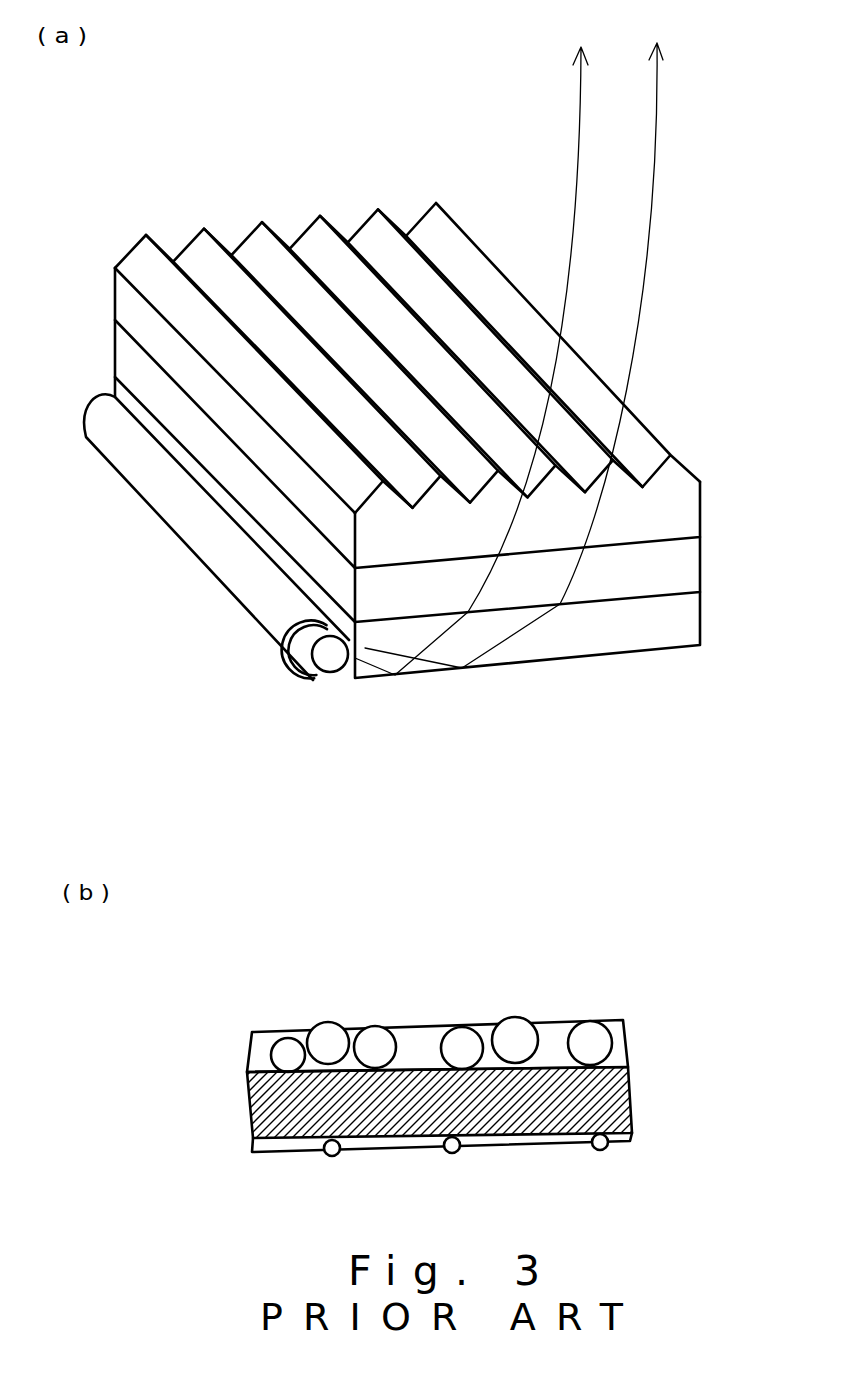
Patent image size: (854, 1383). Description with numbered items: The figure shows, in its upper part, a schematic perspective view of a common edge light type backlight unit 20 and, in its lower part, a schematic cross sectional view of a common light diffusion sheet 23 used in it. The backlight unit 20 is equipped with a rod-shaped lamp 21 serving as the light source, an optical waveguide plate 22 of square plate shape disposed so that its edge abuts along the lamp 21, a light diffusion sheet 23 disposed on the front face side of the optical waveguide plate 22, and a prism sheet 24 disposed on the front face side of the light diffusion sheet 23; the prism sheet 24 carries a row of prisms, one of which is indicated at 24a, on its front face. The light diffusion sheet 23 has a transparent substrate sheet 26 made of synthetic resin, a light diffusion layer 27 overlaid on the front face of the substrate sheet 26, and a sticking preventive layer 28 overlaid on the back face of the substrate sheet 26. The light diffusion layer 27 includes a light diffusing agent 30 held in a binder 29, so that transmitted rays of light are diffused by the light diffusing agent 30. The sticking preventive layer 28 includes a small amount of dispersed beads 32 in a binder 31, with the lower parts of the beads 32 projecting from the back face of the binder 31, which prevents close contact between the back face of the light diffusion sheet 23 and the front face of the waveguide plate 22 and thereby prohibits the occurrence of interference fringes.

The backlight unit 20 is at (208, 150).
The lamp 21 is at (330, 657).
The optical waveguide plate 22 is at (682, 627).
The light diffusion sheet 23 is at (680, 575).
The prism sheet 24 is at (439, 380).
The prism 24a is at (435, 230).
The substrate sheet 26 is at (632, 1097).
The light diffusion layer 27 is at (490, 1002).
The sticking preventive layer 28 is at (492, 1170).
The binder 29 is at (418, 1040).
The light diffusing agent 30 is at (508, 1033).
The binder 31 is at (383, 1143).
The beads 32 is at (453, 1153).